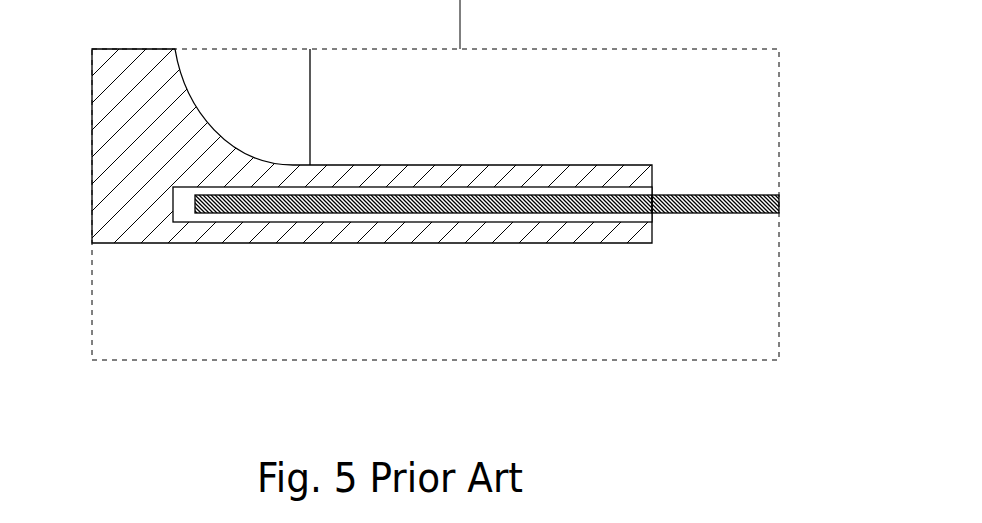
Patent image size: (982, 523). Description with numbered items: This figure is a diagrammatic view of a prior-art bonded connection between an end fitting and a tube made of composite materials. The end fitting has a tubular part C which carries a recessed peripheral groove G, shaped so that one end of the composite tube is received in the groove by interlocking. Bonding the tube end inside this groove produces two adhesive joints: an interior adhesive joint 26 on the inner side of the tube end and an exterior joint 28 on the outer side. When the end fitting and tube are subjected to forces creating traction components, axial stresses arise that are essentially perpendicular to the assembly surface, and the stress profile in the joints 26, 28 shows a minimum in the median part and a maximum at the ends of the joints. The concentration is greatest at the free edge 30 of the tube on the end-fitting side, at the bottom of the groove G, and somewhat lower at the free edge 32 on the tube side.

The interior adhesive joint 26 is at (493, 200).
The exterior joint 28 is at (520, 215).
The free edge of the tube on the end-fitting side 30 is at (173, 203).
The free edge on the tube side 32 is at (652, 192).
The part C of the end fitting C is at (345, 243).
The peripheral groove G is at (245, 243).